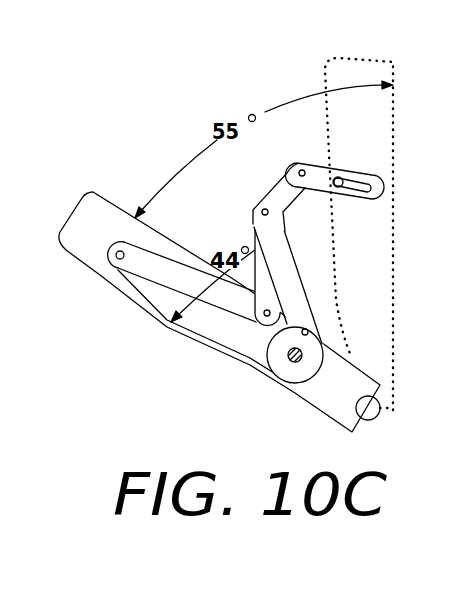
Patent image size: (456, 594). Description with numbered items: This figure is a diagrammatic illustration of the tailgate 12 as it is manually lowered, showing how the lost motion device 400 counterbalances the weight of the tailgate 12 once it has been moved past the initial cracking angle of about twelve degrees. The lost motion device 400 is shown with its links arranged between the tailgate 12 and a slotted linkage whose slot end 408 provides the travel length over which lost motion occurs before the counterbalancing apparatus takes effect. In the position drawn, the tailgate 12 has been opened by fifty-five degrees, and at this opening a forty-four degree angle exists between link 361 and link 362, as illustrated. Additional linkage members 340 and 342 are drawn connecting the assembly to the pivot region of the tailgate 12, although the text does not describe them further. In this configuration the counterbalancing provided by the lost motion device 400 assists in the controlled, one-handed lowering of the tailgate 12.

The tailgate 12 is at (112, 285).
The link 340 is at (153, 262).
The upper link 342 is at (251, 229).
The link 361 is at (228, 333).
The link 362 is at (297, 290).
The lost motion device 400 is at (212, 103).
The end of slot 408 is at (368, 182).